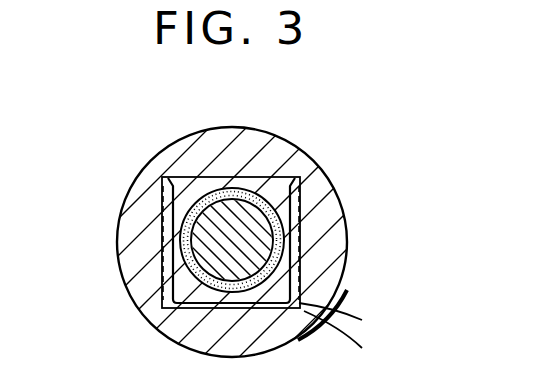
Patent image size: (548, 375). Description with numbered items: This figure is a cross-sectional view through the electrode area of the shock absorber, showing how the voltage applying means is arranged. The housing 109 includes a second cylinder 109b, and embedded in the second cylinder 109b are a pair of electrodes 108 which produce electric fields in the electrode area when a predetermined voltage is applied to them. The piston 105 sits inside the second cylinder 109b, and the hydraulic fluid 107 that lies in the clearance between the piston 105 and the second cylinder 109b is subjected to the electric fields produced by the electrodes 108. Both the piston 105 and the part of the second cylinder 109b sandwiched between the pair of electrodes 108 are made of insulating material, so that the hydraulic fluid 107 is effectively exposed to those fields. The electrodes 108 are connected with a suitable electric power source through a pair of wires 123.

The piston 105 is at (263, 247).
The hydraulic fluid 107 is at (205, 262).
The electrodes 108 is at (232, 144).
The housing 109 is at (322, 202).
The second cylinder 109b is at (298, 256).
The wires 123 is at (362, 317).